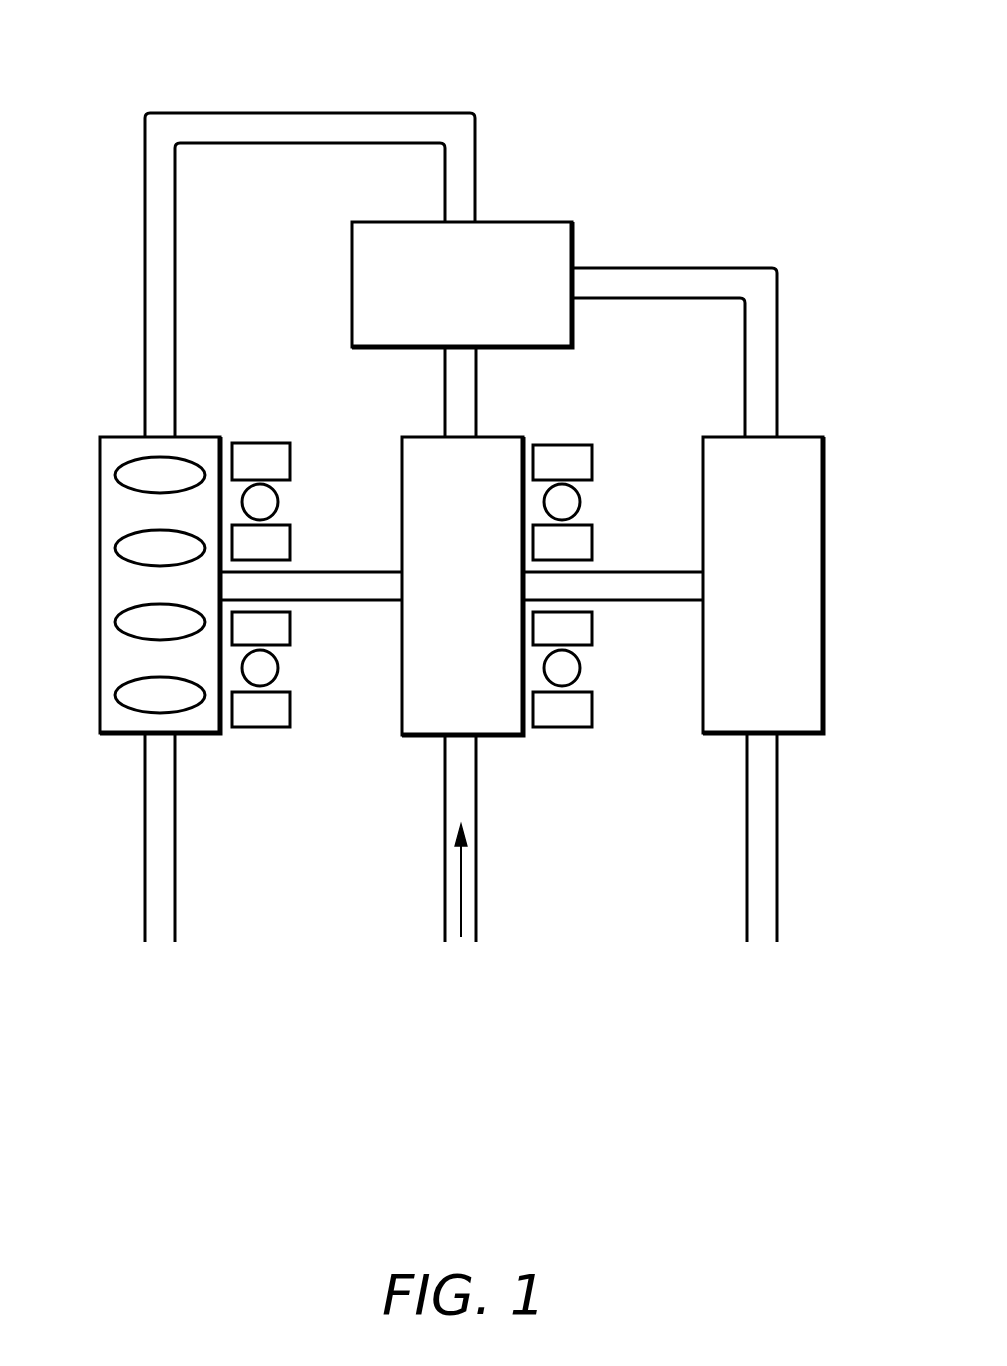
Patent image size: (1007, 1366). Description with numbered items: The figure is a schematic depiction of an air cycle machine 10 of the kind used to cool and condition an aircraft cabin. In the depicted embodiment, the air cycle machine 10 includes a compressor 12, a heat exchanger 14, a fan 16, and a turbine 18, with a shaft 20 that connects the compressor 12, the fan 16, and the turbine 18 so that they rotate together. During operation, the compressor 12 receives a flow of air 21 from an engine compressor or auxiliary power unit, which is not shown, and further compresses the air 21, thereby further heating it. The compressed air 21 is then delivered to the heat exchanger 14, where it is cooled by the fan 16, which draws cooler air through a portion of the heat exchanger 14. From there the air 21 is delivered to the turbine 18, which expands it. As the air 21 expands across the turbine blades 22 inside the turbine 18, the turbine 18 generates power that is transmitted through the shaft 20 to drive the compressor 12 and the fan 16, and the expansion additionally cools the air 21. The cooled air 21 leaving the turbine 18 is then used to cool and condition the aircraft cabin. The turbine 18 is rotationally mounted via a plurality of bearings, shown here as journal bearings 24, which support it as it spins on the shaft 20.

The air cycle machine 10 is at (762, 60).
The compressor 12 is at (420, 437).
The heat exchanger 14 is at (352, 283).
The fan 16 is at (722, 437).
The turbine 18 is at (118, 437).
The shaft 20 is at (368, 571).
The flow of air 21 is at (462, 897).
The turbine blades 22 is at (115, 472).
The journal bearings 24 is at (279, 501).